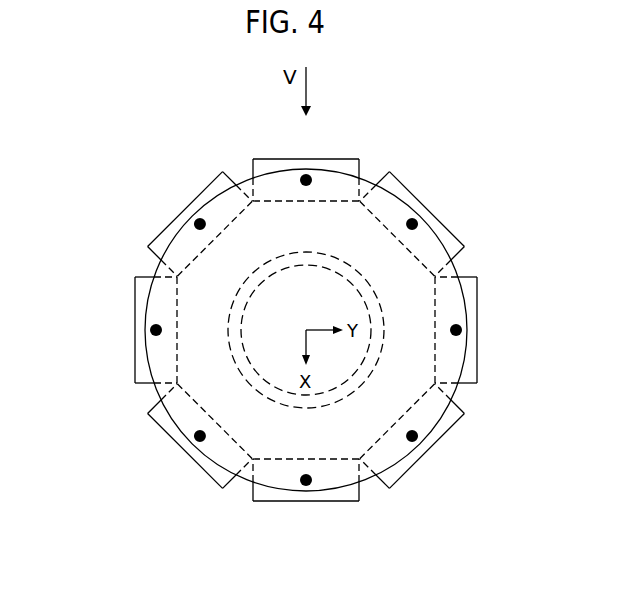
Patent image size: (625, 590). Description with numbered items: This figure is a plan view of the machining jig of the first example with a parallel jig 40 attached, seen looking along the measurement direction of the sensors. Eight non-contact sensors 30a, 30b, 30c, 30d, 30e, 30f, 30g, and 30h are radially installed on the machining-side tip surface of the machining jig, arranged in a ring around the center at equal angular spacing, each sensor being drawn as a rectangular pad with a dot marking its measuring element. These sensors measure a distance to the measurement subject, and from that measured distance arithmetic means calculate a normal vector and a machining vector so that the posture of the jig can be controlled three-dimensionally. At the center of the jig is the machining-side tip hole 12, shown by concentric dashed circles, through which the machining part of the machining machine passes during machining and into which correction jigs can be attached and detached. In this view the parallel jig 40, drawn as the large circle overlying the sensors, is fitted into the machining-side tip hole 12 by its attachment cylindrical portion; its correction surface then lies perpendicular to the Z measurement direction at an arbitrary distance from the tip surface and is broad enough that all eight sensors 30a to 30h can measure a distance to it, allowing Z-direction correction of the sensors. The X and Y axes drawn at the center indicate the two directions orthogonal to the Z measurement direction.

The machining-side tip hole 12 is at (278, 369).
The non-contact sensor 30a is at (135, 330).
The non-contact sensor 30b is at (177, 218).
The non-contact sensor 30c is at (320, 160).
The non-contact sensor 30d is at (428, 208).
The non-contact sensor 30e is at (477, 340).
The non-contact sensor 30f is at (422, 452).
The non-contact sensor 30g is at (303, 497).
The non-contact sensor 30h is at (180, 443).
The parallel jig 40 is at (466, 395).